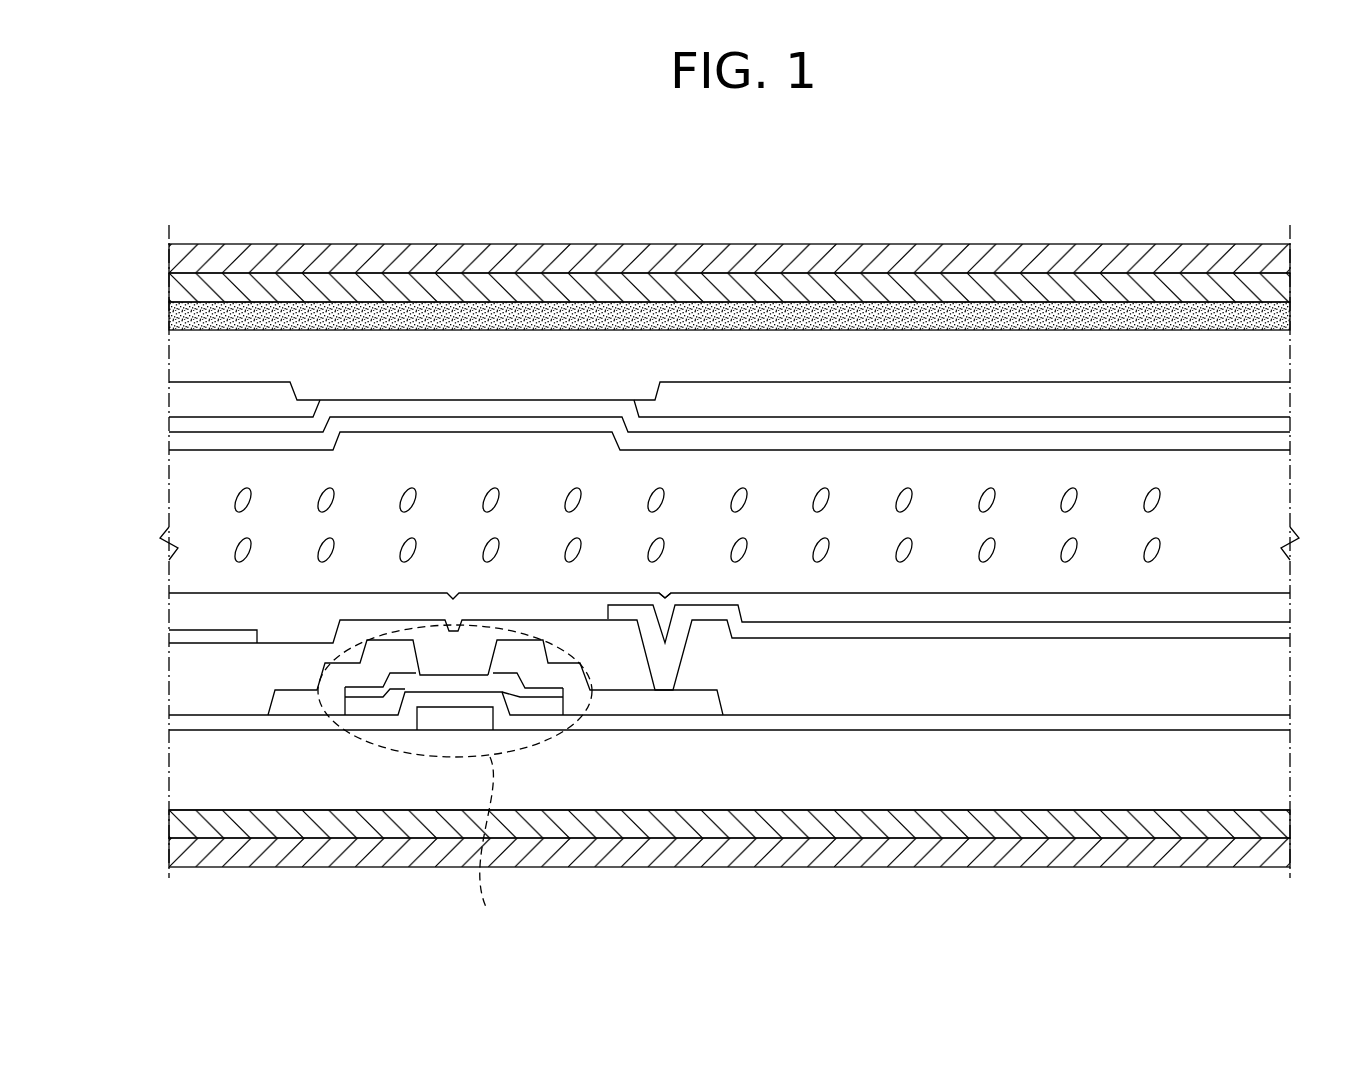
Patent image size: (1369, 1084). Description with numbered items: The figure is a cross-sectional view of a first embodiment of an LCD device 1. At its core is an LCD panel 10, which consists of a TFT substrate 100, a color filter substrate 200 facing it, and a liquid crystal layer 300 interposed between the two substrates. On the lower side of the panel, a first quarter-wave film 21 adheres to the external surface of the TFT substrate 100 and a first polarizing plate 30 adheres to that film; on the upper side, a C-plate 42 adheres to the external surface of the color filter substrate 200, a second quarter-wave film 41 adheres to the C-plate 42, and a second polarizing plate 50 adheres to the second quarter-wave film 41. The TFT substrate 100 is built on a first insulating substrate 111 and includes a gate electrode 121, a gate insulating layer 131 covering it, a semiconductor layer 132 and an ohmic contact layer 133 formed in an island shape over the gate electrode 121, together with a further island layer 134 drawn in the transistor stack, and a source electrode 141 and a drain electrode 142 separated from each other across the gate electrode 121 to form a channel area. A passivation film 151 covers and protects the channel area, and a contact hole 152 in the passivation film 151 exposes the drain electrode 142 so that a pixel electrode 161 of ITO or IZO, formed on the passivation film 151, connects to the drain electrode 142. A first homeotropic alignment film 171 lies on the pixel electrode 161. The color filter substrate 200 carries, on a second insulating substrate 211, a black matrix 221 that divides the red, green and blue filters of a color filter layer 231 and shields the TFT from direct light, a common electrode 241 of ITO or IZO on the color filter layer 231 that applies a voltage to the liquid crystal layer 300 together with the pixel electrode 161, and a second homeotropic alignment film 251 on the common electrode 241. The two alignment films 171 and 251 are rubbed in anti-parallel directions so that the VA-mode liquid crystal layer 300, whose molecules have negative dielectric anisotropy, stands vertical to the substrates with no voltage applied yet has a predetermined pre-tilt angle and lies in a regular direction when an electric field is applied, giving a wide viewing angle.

The LCD device 1 is at (120, 161).
The LCD panel 10 is at (75, 398).
The TFT substrate 100 is at (142, 612).
The color filter substrate 200 is at (142, 345).
The liquid crystal layer 300 is at (171, 508).
The second polarizing plate 50 is at (1290, 252).
The second λ/4 film 41 is at (1290, 288).
The C-plate 42 is at (1290, 320).
The first λ/4 film 21 is at (1290, 820).
The first polarizing plate 30 is at (1290, 855).
The second insulating substrate 211 is at (527, 340).
The black matrix 221 is at (595, 385).
The color filter layer 231 is at (702, 387).
The common electrode 241 is at (777, 420).
The second homeotropic alignment film 251 is at (847, 438).
The first insulating substrate 111 is at (923, 778).
The gate insulating layer 131 is at (203, 725).
The gate electrode 121 is at (447, 712).
The semiconductor layer 132 is at (401, 705).
The active layer 134 is at (355, 700).
The ohmic contact layer 133 is at (540, 705).
The source electrode 141 is at (292, 708).
The drain electrode 142 is at (620, 705).
The passivation film 151 is at (820, 708).
The contact hole 152 is at (676, 588).
The pixel electrode 161 is at (1025, 637).
The first homeotropic alignment film 171 is at (1132, 610).